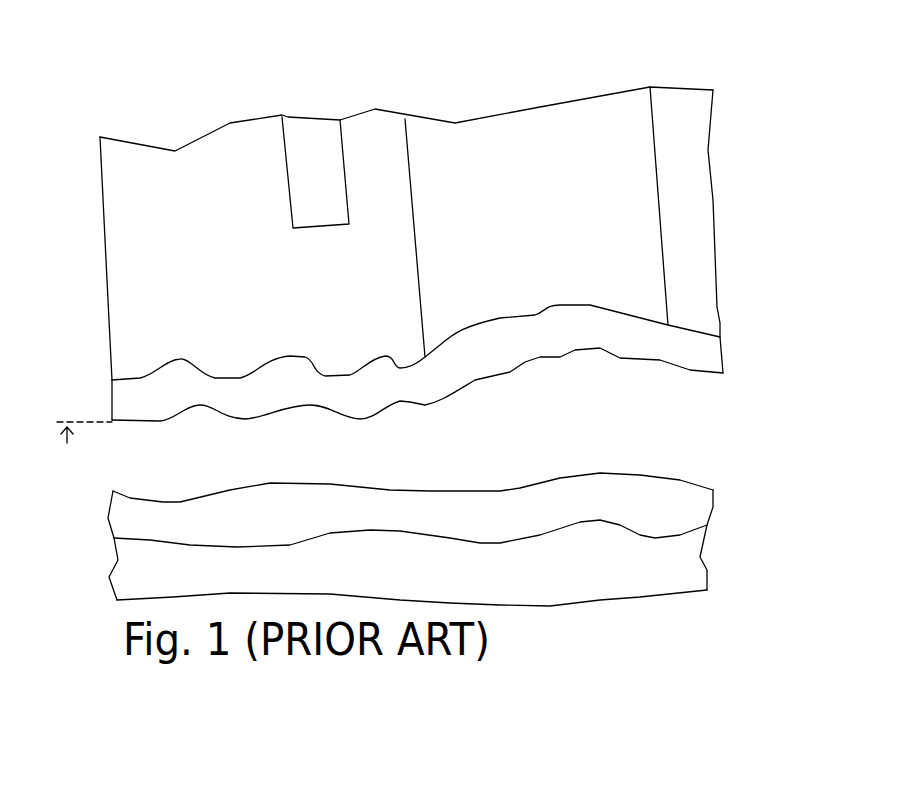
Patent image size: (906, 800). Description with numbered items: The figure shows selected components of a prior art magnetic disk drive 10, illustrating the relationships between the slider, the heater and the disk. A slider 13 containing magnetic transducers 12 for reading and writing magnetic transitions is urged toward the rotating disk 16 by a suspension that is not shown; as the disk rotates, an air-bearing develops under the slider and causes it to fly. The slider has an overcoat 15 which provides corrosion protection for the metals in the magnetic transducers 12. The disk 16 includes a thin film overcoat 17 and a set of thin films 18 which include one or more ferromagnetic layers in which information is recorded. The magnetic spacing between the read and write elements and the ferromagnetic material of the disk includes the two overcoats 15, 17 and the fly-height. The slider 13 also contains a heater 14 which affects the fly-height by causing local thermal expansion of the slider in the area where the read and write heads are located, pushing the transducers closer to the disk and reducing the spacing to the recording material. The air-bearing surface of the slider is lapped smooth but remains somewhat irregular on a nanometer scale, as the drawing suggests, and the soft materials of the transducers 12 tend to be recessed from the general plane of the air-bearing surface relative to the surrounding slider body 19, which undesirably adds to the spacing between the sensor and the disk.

The magnetic disk drive 10 is at (633, 41).
The magnetic transducers 12 is at (510, 130).
The slider 13 is at (87, 353).
The heater 14 is at (302, 203).
The overcoat 15 is at (710, 353).
The disk 16 is at (102, 538).
The thin film overcoat 17 is at (702, 509).
The set of thin films 18 is at (690, 553).
The slider body 19 is at (705, 212).